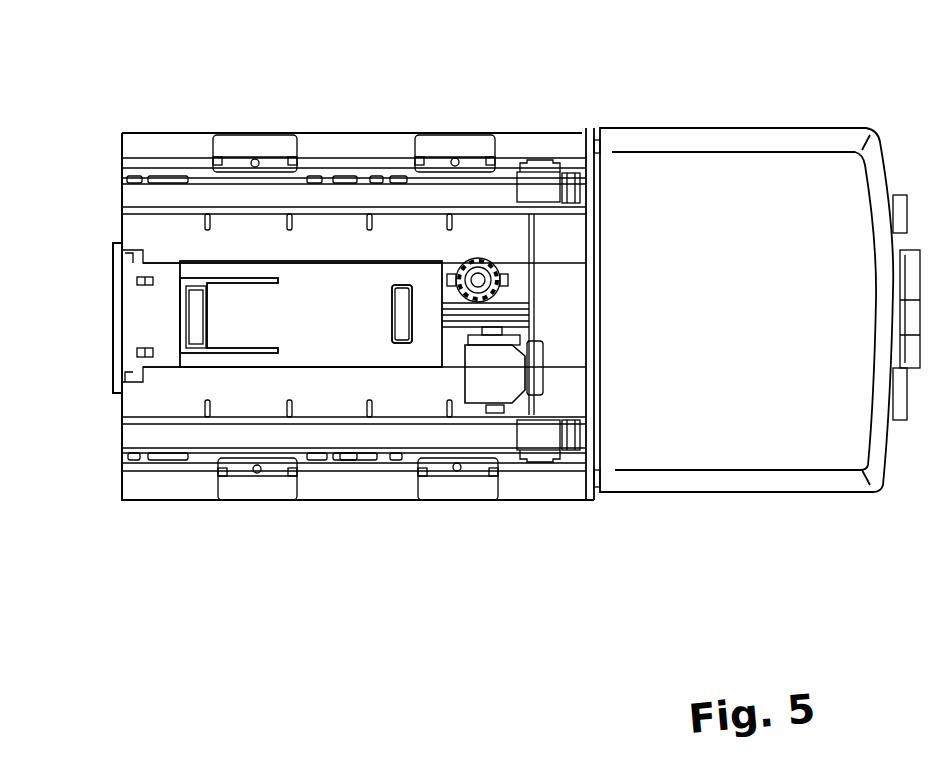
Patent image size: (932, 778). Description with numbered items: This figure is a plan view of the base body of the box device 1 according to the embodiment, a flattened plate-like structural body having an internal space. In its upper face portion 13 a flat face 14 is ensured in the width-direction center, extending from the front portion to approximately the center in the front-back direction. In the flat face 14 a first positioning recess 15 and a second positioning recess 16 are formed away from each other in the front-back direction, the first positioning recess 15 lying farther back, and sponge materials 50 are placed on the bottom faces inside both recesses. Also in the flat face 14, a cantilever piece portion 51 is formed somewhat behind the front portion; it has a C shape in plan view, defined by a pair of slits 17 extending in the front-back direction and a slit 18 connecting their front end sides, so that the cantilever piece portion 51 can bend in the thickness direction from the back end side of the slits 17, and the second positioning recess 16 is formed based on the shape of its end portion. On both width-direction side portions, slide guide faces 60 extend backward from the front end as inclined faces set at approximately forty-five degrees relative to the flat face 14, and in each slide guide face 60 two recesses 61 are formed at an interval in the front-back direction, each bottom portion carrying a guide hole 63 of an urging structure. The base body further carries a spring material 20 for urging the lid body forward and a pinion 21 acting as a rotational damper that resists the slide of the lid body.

The optical pickup device 1 is at (739, 41).
The upper face portion 13 is at (327, 320).
The flat face 14 is at (327, 320).
The first positioning recess 15 is at (402, 323).
The second positioning recess 16 is at (198, 345).
The slit 17 is at (248, 262).
The slit 18 is at (180, 318).
The spring material 20 is at (498, 378).
The pinion 21 is at (468, 253).
The sponge material 50 is at (198, 345).
The cantilever piece portion 51 is at (233, 315).
The slide guide face 60 is at (158, 142).
The recess 61 is at (233, 163).
The guide hole 63 is at (455, 158).